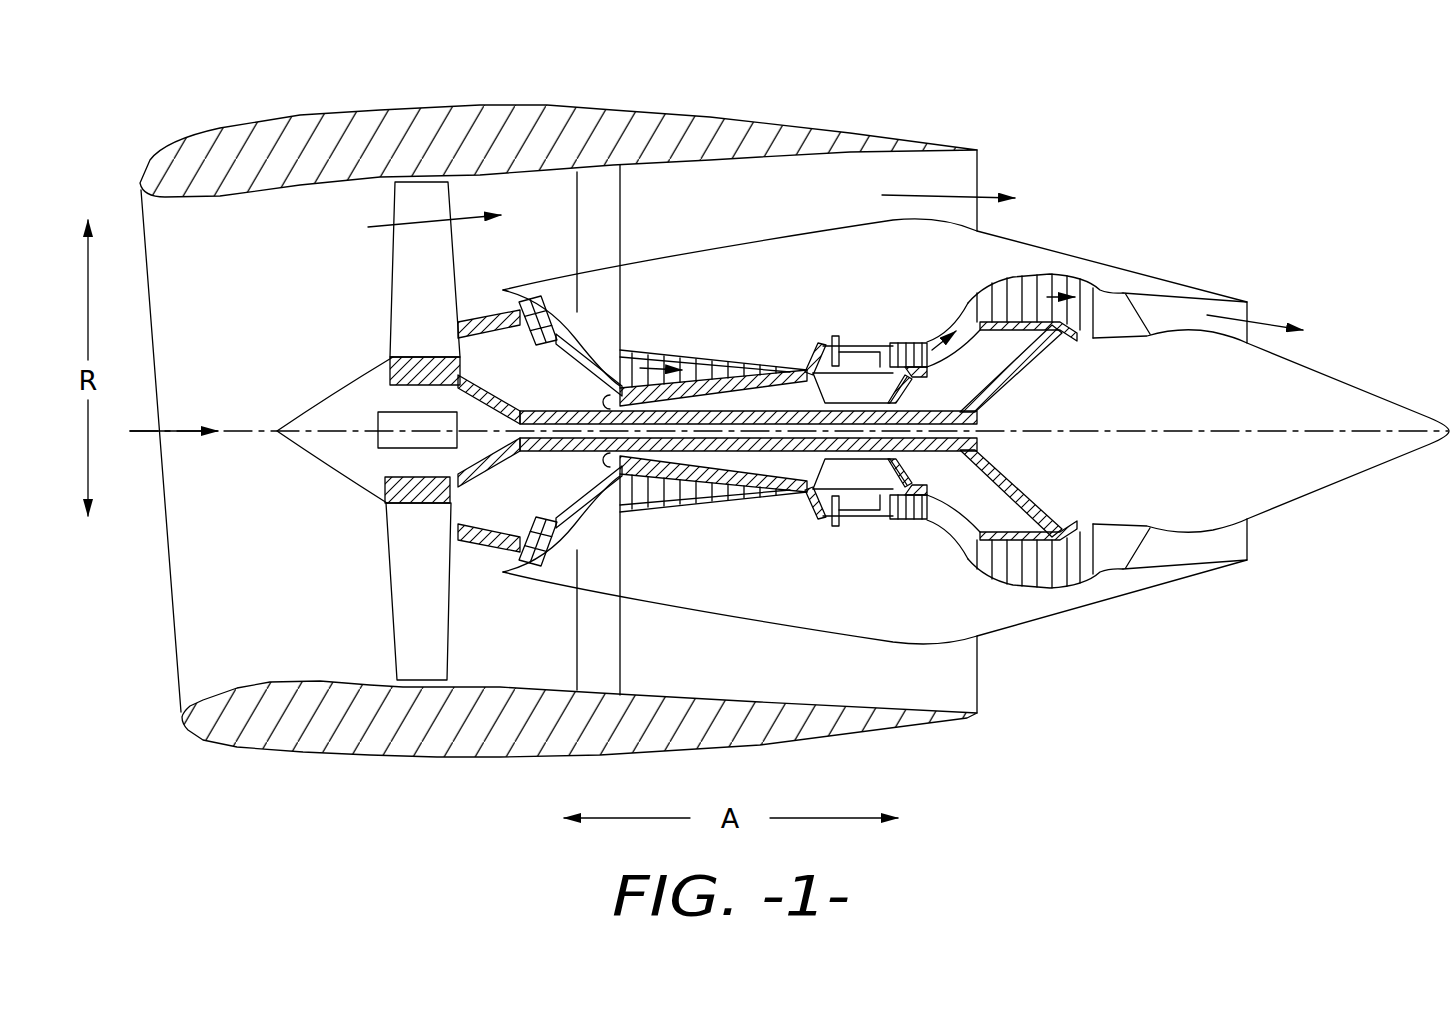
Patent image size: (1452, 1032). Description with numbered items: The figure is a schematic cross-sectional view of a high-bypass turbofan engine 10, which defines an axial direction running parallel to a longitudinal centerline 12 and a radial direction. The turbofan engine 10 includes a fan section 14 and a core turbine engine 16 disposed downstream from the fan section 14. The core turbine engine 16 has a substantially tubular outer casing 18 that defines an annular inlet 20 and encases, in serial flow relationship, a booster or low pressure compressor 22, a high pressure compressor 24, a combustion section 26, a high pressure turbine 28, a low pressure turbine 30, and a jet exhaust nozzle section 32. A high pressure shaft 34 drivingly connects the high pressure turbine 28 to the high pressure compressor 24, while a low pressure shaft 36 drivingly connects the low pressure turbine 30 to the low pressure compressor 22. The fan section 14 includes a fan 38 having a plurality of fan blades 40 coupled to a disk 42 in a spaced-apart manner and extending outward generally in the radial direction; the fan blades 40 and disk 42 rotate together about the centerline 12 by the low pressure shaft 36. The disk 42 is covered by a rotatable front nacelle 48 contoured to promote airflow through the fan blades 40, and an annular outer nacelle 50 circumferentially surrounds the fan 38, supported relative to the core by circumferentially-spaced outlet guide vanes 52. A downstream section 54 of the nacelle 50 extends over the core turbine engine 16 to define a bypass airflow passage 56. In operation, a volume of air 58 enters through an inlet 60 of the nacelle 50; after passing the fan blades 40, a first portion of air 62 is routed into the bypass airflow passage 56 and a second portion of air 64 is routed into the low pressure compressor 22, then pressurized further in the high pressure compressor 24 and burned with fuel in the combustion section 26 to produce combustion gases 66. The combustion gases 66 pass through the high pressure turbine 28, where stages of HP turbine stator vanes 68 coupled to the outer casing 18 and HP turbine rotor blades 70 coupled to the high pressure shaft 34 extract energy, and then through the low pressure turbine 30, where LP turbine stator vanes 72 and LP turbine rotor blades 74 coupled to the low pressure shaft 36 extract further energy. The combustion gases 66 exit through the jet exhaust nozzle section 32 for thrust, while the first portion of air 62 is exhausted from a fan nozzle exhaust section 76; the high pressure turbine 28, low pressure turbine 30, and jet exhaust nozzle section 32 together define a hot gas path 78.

The turbofan engine 10 is at (1234, 178).
The longitudinal centerline 12 is at (1158, 427).
The fan section 14 is at (477, 86).
The core turbine engine 16 is at (797, 296).
The outer casing 18 is at (818, 628).
The annular inlet 20 is at (510, 559).
The low pressure compressor 22 is at (580, 530).
The high pressure compressor 24 is at (653, 512).
The combustion section 26 is at (852, 517).
The high pressure turbine 28 is at (927, 512).
The low pressure turbine 30 is at (1077, 590).
The jet exhaust nozzle section 32 is at (1247, 310).
The high pressure shaft 34 is at (908, 382).
The low pressure shaft 36 is at (573, 407).
The fan 38 is at (375, 263).
The fan blades 40 is at (377, 618).
The disk 42 is at (388, 357).
The rotatable front nacelle 48 is at (313, 410).
The outer nacelle 50 is at (453, 750).
The outlet guide vanes 52 is at (621, 190).
The downstream section of nacelle 54 is at (786, 118).
The bypass airflow passage 56 is at (737, 209).
The volume of air 58 is at (172, 430).
The inlet 60 is at (172, 662).
The first portion of air 62 is at (405, 227).
The second portion of air 64 is at (483, 298).
The combustion gases 66 is at (1028, 288).
The HP turbine stator vanes 68 is at (897, 523).
The HP turbine rotor blades 70 is at (912, 523).
The LP turbine stator vanes 72 is at (987, 558).
The LP turbine rotor blades 74 is at (997, 570).
The fan nozzle exhaust section 76 is at (978, 173).
The hot gas path 78 is at (965, 311).